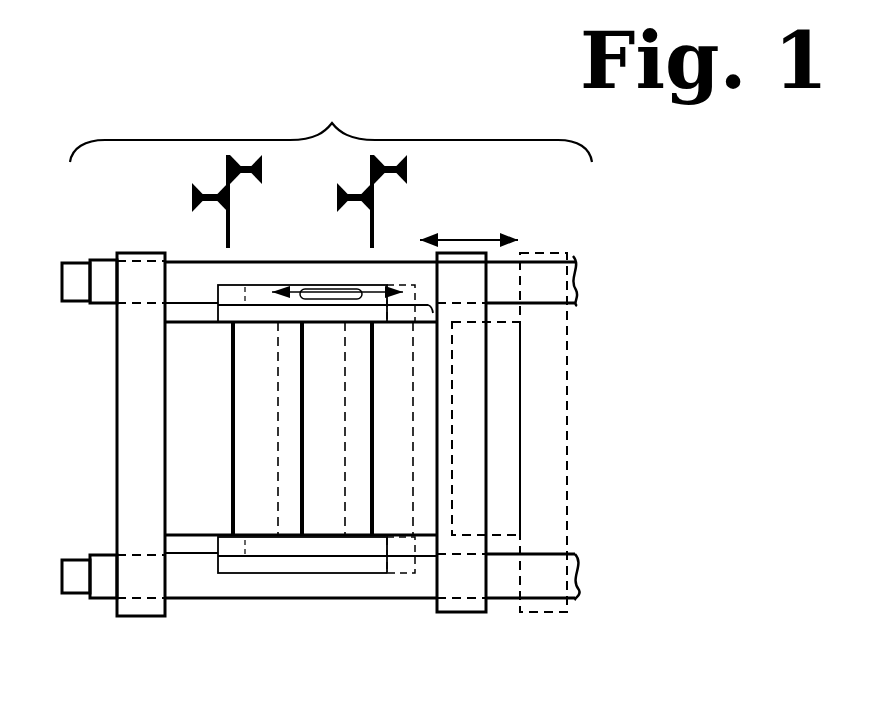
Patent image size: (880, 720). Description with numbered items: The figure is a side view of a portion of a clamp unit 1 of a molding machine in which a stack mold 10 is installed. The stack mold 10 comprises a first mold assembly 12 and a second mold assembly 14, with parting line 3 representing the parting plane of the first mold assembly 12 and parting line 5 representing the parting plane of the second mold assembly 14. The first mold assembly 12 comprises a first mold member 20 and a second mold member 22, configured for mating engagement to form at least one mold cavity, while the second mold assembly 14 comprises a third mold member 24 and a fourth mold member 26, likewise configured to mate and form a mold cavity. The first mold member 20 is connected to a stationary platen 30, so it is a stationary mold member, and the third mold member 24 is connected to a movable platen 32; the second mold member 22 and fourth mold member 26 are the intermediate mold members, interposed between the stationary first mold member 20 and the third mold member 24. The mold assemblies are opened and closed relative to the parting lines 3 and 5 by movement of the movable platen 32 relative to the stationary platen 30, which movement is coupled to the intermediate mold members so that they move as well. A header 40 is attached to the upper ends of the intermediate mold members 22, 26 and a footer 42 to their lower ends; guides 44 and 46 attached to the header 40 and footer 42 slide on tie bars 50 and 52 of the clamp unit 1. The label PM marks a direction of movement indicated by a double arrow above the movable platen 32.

The clamp unit 1 is at (332, 123).
The parting line 3 is at (227, 183).
The parting line 5 is at (370, 183).
The stack mold 10 is at (415, 211).
The first mold assembly 12 is at (243, 302).
The second mold assembly 14 is at (372, 302).
The first mold member 20 is at (212, 512).
The second mold member 22 is at (247, 510).
The third mold member 24 is at (420, 517).
The fourth mold member 26 is at (360, 517).
The stationary platen 30 is at (135, 608).
The movable platen 32 is at (477, 603).
The header 40 is at (299, 313).
The footer 42 is at (252, 540).
The guide 44 is at (306, 288).
The guide 46 is at (285, 567).
The tie bar 50 is at (576, 298).
The tie bar 52 is at (555, 580).
The positioning movement direction PM is at (461, 238).